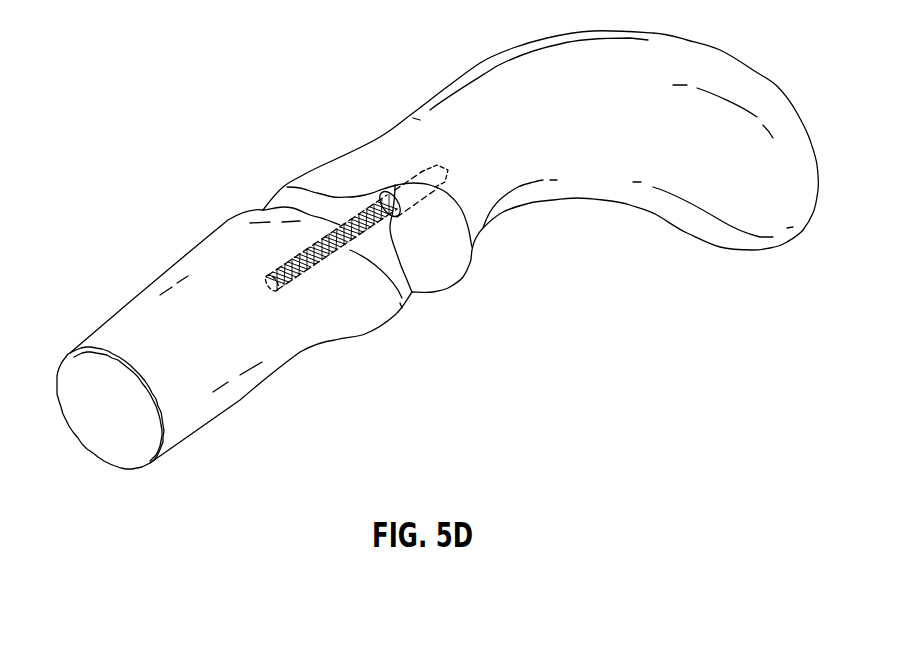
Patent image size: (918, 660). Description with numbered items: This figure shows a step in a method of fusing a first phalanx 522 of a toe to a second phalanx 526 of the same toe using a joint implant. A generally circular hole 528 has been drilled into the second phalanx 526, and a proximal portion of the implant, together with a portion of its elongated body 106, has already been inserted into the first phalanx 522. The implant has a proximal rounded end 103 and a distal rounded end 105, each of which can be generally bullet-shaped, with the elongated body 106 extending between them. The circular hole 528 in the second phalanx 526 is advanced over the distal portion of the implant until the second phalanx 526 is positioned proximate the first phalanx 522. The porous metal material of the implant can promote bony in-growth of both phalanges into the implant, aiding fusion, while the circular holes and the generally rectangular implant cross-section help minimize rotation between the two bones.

The rounded end 103 is at (437, 158).
The rounded end 105 is at (267, 275).
The elongated body 106 is at (395, 186).
The first phalanx 522 is at (753, 227).
The second phalanx 526 is at (183, 427).
The circular hole 528 is at (423, 292).